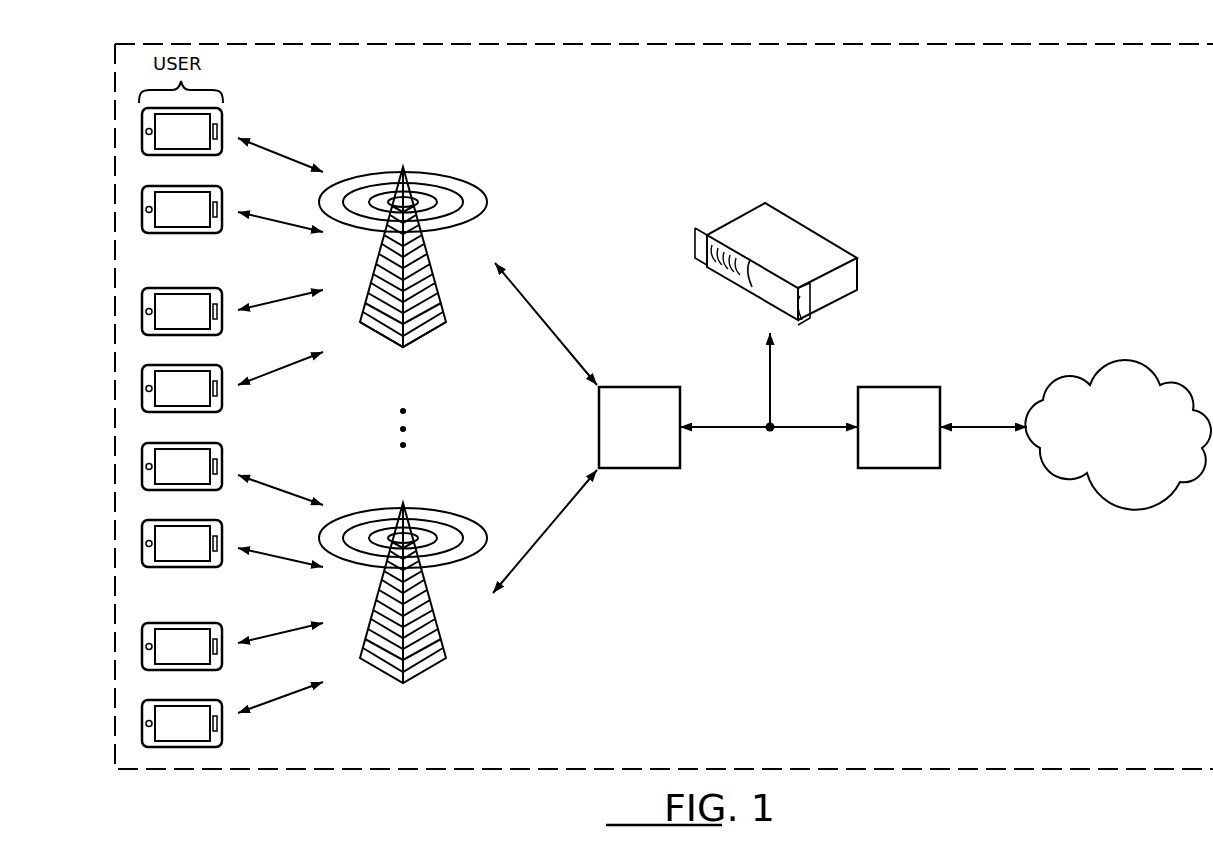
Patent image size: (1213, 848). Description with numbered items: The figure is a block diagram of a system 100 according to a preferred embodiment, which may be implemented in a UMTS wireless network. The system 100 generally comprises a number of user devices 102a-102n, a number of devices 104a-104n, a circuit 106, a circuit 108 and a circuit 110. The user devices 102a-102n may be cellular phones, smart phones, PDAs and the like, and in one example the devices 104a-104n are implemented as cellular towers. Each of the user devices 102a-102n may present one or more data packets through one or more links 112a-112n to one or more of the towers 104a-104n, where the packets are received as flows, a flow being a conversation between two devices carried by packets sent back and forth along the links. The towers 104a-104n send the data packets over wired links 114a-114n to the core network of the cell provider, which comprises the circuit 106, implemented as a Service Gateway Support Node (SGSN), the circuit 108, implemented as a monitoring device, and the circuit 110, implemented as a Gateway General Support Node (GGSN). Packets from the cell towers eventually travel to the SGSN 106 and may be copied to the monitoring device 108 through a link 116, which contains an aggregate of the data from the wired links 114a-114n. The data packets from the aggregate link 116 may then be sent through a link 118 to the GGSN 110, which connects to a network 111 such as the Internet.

The system 100 is at (566, 30).
The user device 102a is at (224, 126).
The user device 102n is at (224, 725).
The cellular tower 104a is at (445, 316).
The cellular tower 104n is at (445, 652).
The Service Gateway Support Node (SGSN) 106 is at (640, 468).
The monitoring device 108 is at (823, 236).
The Gateway General Support Node (GGSN) 110 is at (900, 468).
The network 111 is at (1098, 342).
The link 112a is at (283, 154).
The link 112n is at (283, 699).
The wired link 114a is at (547, 323).
The wired link 114n is at (550, 524).
The link 116 is at (726, 428).
The link 118 is at (968, 424).